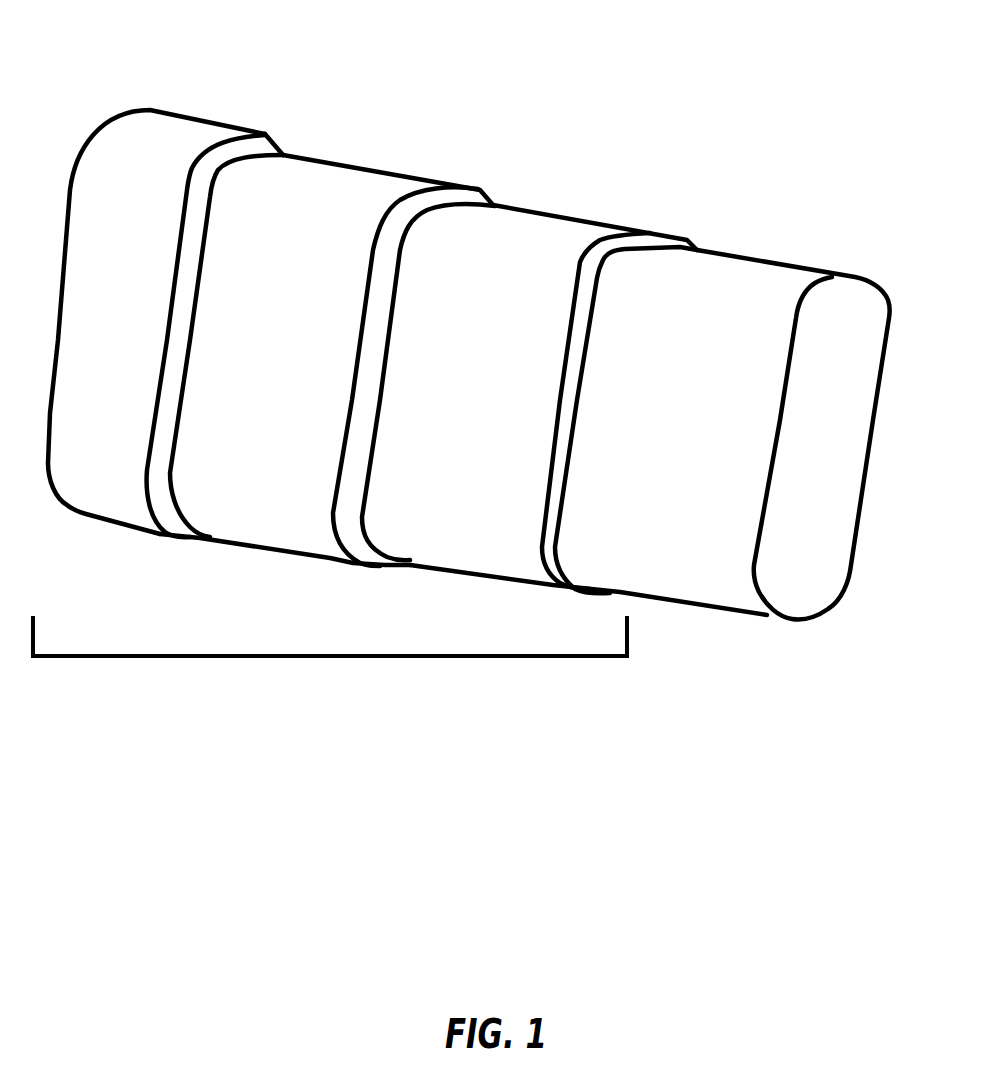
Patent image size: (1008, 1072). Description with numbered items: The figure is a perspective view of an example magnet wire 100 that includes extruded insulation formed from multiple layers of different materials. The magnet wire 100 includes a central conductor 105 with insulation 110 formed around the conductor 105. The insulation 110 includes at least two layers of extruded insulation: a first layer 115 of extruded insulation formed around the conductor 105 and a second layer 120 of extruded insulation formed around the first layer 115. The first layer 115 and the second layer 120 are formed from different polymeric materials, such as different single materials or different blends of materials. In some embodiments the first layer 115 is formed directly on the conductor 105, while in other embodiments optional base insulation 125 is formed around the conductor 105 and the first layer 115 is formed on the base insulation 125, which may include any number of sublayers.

The magnet wire 100 is at (461, 392).
The conductor 105 is at (768, 288).
The insulation 110 is at (330, 660).
The first layer 115 is at (338, 195).
The second layer 120 is at (144, 132).
The base insulation 125 is at (538, 243).